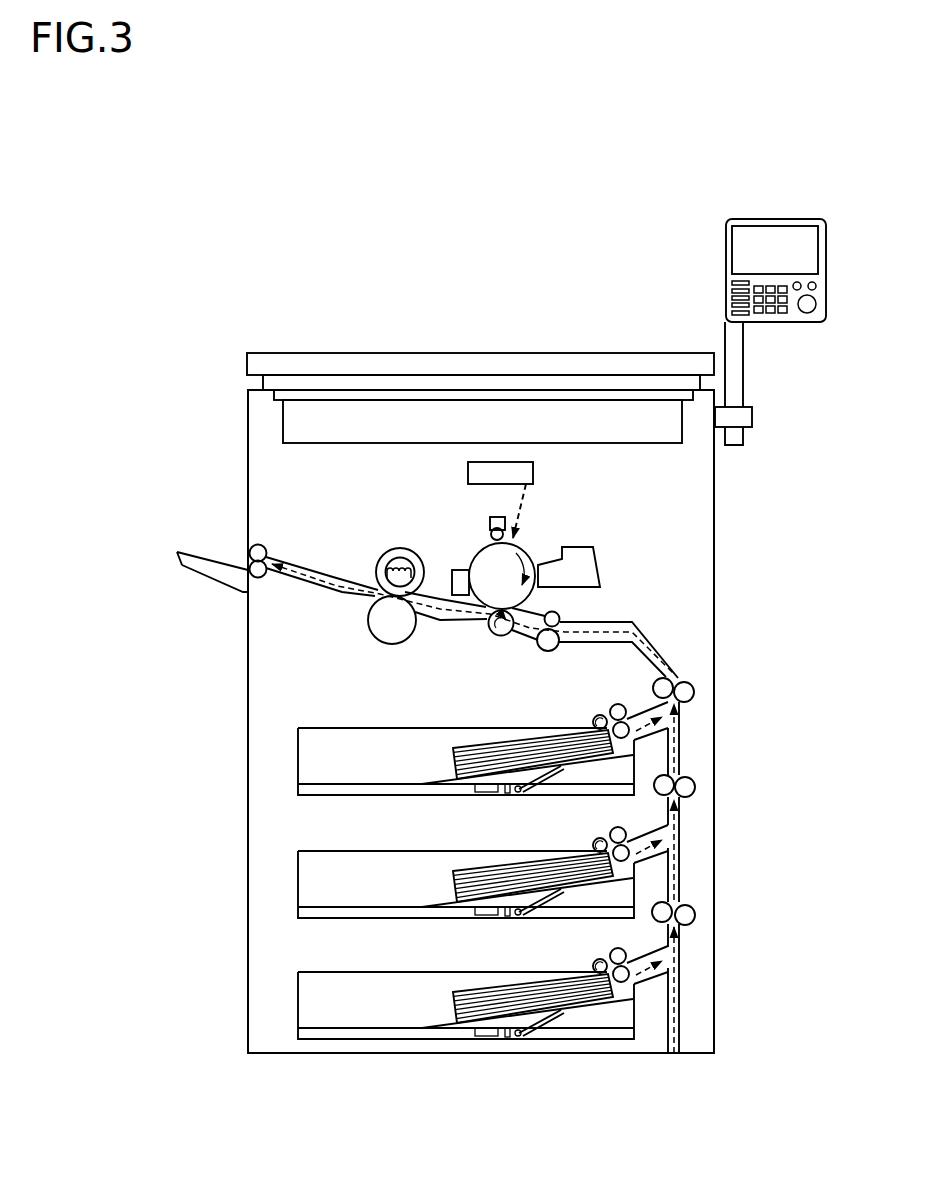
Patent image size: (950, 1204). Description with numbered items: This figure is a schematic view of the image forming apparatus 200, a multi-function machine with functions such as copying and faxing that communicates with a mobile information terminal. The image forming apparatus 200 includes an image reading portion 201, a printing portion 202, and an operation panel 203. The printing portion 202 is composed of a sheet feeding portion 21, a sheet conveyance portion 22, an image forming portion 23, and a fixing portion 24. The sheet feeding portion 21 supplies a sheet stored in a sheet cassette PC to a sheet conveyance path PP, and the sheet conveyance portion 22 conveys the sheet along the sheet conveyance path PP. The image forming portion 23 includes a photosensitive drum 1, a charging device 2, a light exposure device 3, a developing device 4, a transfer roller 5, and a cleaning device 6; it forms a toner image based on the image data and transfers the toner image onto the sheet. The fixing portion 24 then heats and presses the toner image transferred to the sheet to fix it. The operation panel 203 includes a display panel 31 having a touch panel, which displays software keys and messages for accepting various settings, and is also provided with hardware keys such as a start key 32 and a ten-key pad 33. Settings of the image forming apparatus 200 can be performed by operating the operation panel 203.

The image forming apparatus 200 is at (257, 342).
The image reading portion 201 is at (684, 438).
The printing portion 202 is at (684, 580).
The operation panel 203 is at (756, 307).
The display panel 31 is at (767, 231).
The start key 32 is at (810, 312).
The ten-key pad 33 is at (771, 314).
The photosensitive drum 1 is at (486, 558).
The charging device 2 is at (491, 518).
The light exposure device 3 is at (475, 476).
The image forming portion 23 is at (540, 525).
The developing device 4 is at (589, 560).
The transfer roller 5 is at (494, 630).
The cleaning device 6 is at (455, 570).
The fixing portion 24 is at (362, 618).
The sheet feeding portion 21 is at (587, 723).
The sheet conveyance portion 22 is at (266, 540).
The sheet cassette PC is at (327, 727).
The sheet conveyance path PP is at (656, 648).